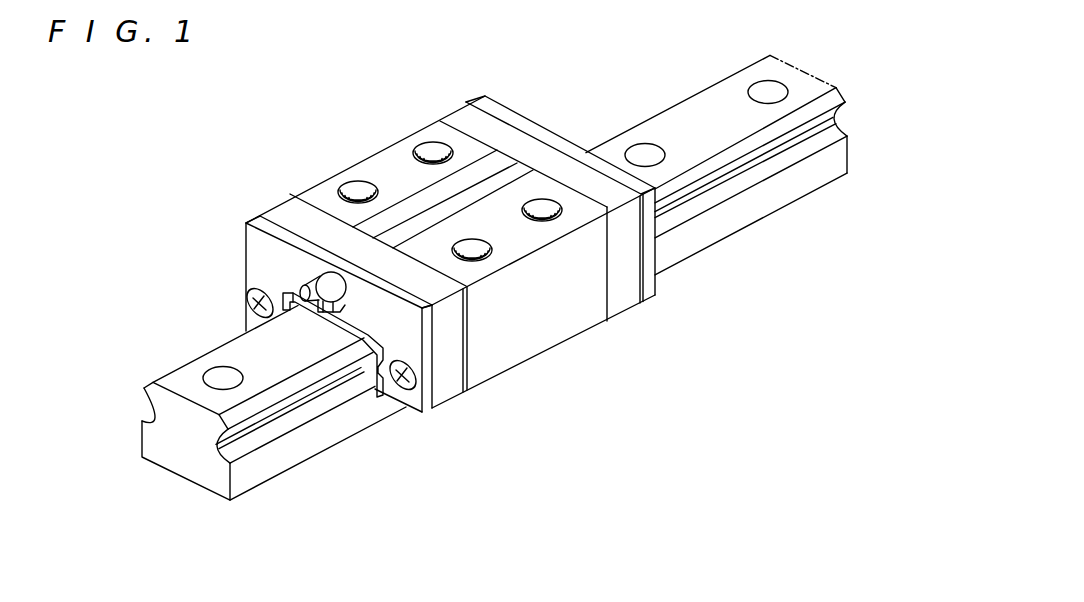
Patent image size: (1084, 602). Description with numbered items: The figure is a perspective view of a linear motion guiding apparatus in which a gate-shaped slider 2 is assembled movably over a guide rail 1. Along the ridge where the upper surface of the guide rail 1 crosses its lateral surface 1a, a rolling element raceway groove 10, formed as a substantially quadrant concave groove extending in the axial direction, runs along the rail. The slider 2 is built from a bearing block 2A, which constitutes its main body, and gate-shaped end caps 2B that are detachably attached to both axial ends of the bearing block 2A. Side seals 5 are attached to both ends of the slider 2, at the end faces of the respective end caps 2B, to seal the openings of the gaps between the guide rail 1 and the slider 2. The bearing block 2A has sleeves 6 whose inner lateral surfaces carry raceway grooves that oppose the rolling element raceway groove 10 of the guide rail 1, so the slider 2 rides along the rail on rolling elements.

The guide rail 1 is at (200, 345).
The lateral surface 1a is at (141, 435).
The rolling element raceway groove 10 is at (153, 386).
The slider 2 is at (347, 167).
The bearing block 2A is at (399, 150).
The end cap 2B is at (282, 218).
The side seal 5 is at (278, 232).
The sleeve 6 is at (549, 305).